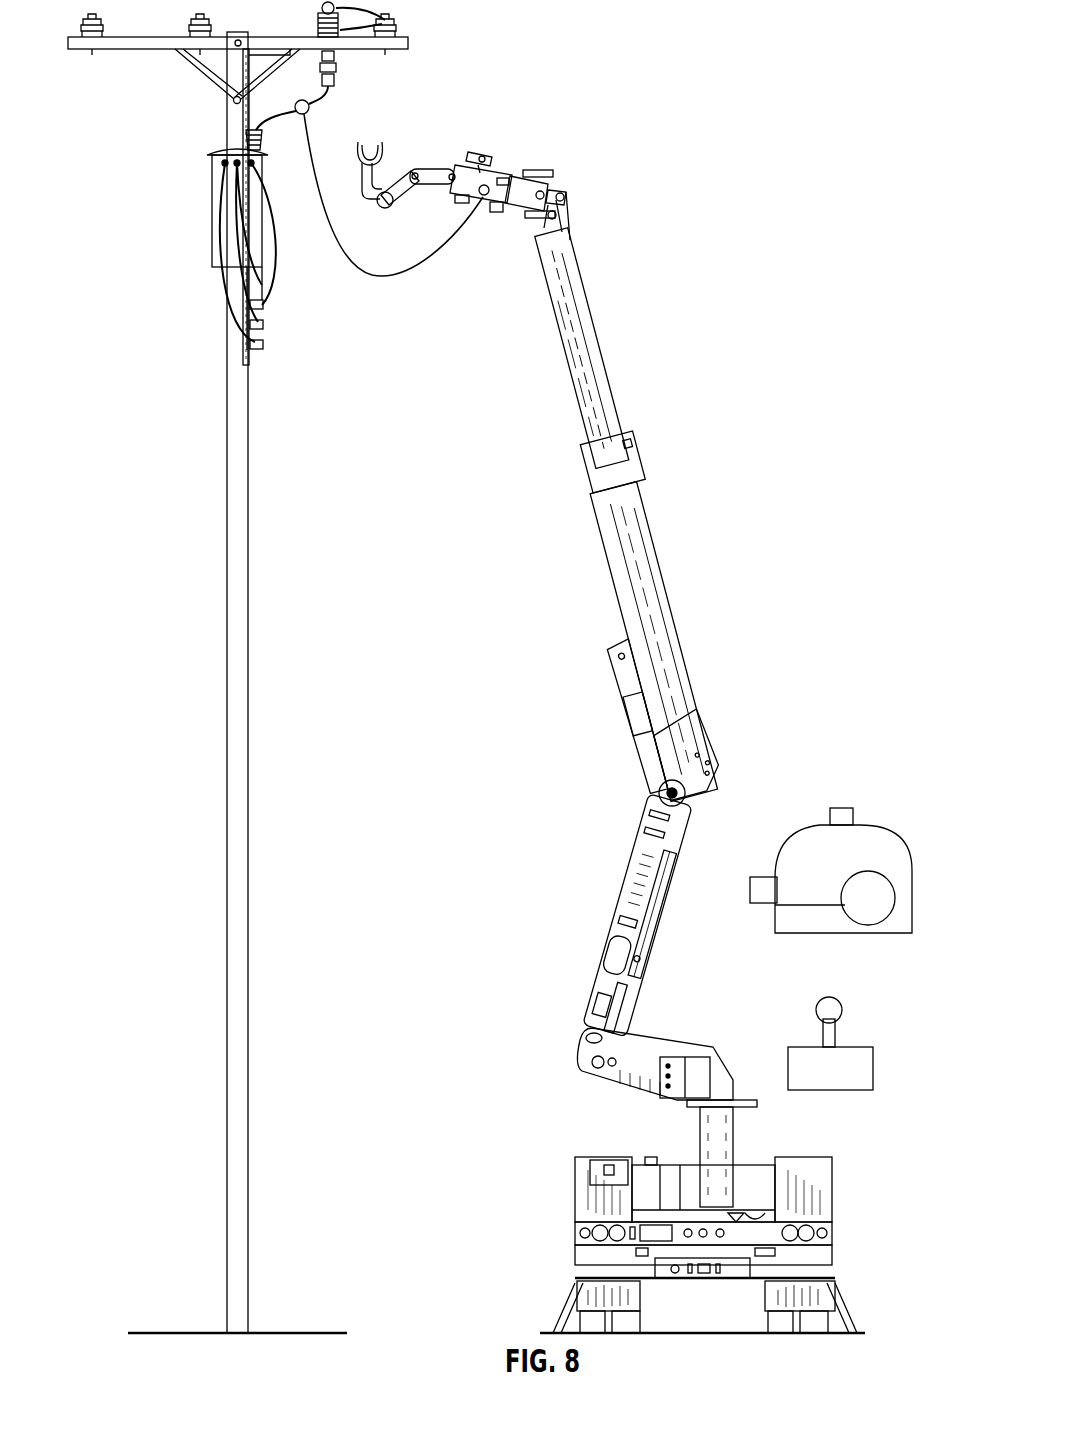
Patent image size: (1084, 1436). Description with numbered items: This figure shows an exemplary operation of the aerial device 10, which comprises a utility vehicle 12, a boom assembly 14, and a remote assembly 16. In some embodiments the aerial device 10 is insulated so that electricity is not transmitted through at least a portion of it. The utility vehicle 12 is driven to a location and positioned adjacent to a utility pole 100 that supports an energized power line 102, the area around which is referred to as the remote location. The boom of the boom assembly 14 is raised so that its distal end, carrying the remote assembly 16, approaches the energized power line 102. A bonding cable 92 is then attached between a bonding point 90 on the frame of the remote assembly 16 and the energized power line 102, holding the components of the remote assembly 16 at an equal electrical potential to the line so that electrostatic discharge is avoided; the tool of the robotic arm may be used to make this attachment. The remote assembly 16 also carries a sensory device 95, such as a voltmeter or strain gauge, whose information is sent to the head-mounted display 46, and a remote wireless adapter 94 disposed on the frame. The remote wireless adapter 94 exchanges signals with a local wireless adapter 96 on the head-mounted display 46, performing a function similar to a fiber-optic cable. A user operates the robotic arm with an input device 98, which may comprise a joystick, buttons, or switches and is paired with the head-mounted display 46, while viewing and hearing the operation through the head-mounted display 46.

The aerial device 10 is at (719, 697).
The utility vehicle 12 is at (577, 1205).
The boom assembly 14 is at (668, 582).
The remote assembly 16 is at (464, 179).
The head-mounted display 46 is at (843, 838).
The bonding point 90 is at (485, 196).
The bonding cable 92 is at (366, 268).
The remote wireless adapter 94 is at (498, 208).
The sensory device 95 is at (457, 198).
The local wireless adapter 96 is at (843, 807).
The input device 98 is at (875, 1068).
The utility pole 100 is at (240, 603).
The energized power line 102 is at (325, 97).